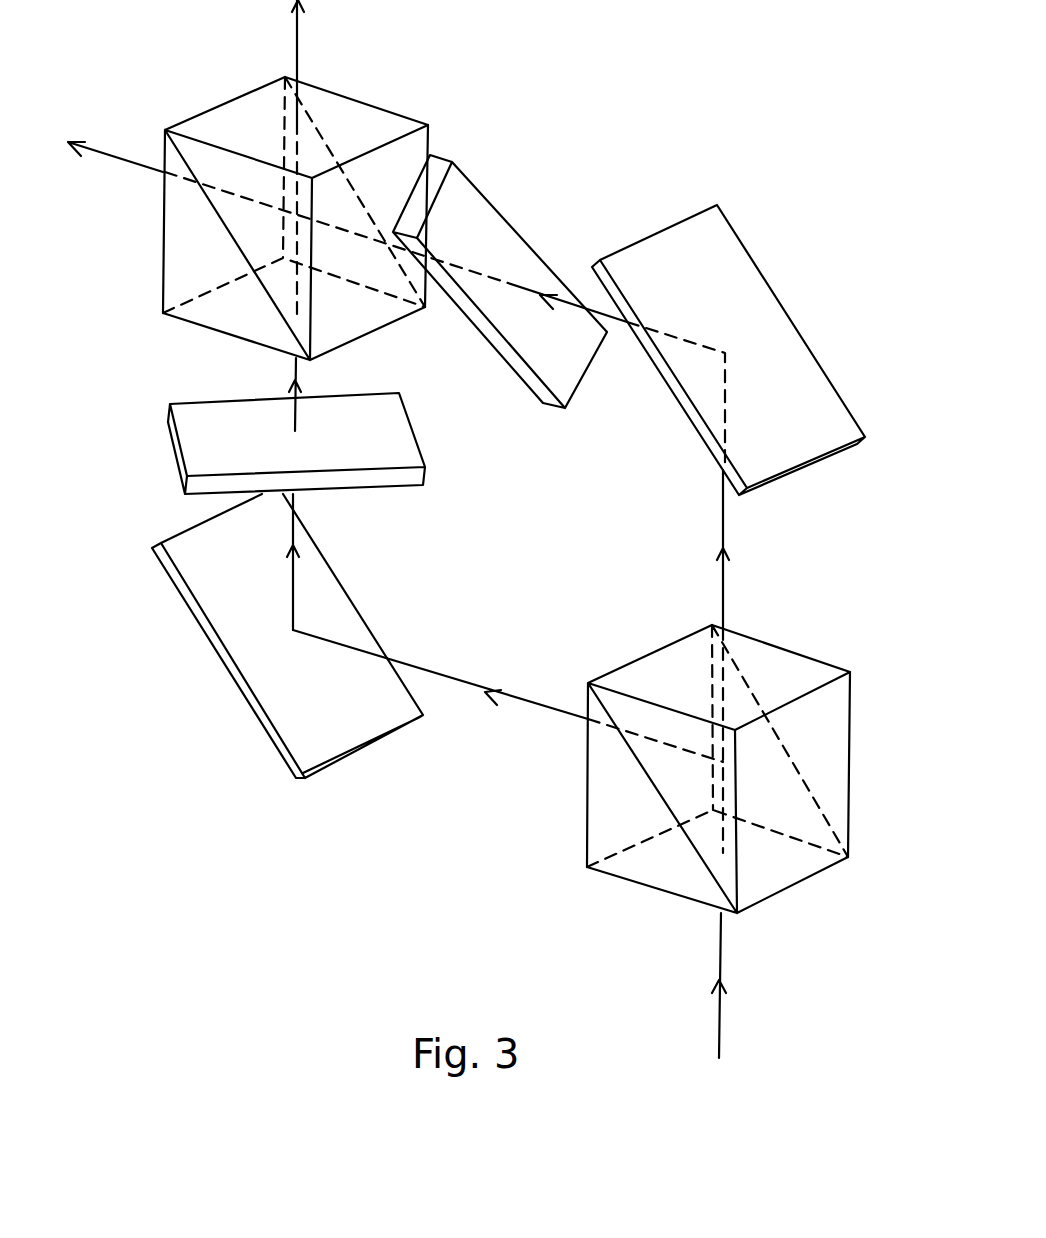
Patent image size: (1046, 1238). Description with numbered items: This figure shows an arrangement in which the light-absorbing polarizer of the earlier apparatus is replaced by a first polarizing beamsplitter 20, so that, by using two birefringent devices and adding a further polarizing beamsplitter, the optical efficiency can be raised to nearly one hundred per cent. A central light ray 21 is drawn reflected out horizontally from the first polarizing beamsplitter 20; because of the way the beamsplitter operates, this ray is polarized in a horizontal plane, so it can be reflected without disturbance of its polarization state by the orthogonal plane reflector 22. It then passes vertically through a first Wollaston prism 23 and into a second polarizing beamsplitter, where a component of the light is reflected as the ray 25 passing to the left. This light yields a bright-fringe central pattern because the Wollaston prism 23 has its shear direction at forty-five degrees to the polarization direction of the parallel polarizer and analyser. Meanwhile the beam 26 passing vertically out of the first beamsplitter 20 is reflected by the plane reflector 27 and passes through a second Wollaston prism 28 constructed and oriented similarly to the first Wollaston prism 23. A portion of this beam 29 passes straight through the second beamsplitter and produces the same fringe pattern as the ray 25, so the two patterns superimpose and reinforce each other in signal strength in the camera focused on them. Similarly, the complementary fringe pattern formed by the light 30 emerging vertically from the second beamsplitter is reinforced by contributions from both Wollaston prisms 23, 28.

The first polarizing beamsplitter 20 is at (852, 833).
The central light ray 21 is at (443, 678).
The orthogonal plane reflector 22 is at (288, 765).
The first Wollaston prism 23 is at (168, 402).
The ray 25 is at (118, 155).
The beam 26 is at (727, 584).
The plane reflector 27 is at (848, 407).
The Wollaston prism 28 is at (527, 243).
The portion of beam 29 is at (407, 233).
The light emerging vertically from beamsplitter 30 is at (300, 43).